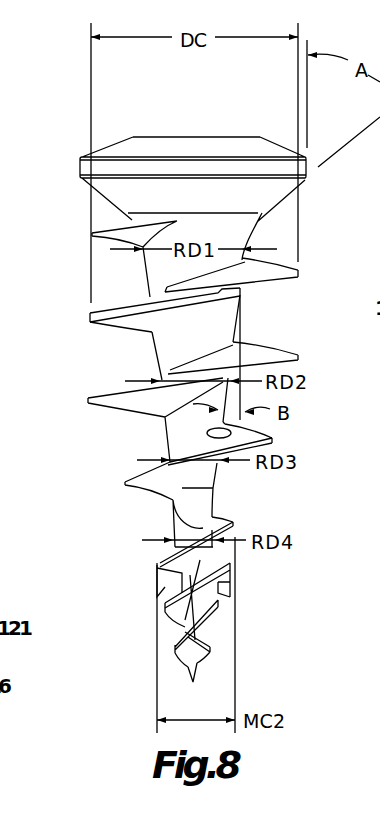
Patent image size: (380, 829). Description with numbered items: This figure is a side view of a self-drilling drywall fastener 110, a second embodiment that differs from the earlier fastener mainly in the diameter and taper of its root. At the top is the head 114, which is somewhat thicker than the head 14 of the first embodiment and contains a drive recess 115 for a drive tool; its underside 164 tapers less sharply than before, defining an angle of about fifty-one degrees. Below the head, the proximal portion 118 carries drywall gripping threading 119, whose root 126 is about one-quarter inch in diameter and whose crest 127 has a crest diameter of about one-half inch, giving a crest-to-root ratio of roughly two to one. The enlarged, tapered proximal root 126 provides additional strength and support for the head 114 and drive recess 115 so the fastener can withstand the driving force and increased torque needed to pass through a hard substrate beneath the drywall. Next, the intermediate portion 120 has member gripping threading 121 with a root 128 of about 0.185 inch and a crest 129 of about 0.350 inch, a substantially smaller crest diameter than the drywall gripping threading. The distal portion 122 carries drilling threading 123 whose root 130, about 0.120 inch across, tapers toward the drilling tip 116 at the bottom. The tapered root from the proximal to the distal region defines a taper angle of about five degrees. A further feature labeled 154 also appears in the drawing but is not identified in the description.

The drywall fastener 110 is at (98, 444).
The head 114 is at (267, 137).
The drive recess 115 is at (187, 136).
The drilling tip 116 is at (190, 683).
The proximal portion 118 is at (321, 235).
The drywall gripping threading 119 is at (113, 326).
The intermediate portion 120 is at (321, 443).
The member gripping threading 121 is at (173, 503).
The distal portion 122 is at (321, 567).
The drilling threading 123 is at (212, 651).
The proximal root portion 126 is at (160, 364).
The crest 127 is at (90, 314).
The root 128 is at (230, 562).
The crest 129 is at (157, 564).
The root 130 is at (182, 635).
The flute 154 is at (232, 592).
The underside 164 is at (287, 190).
The head 14 is at (14, 483).